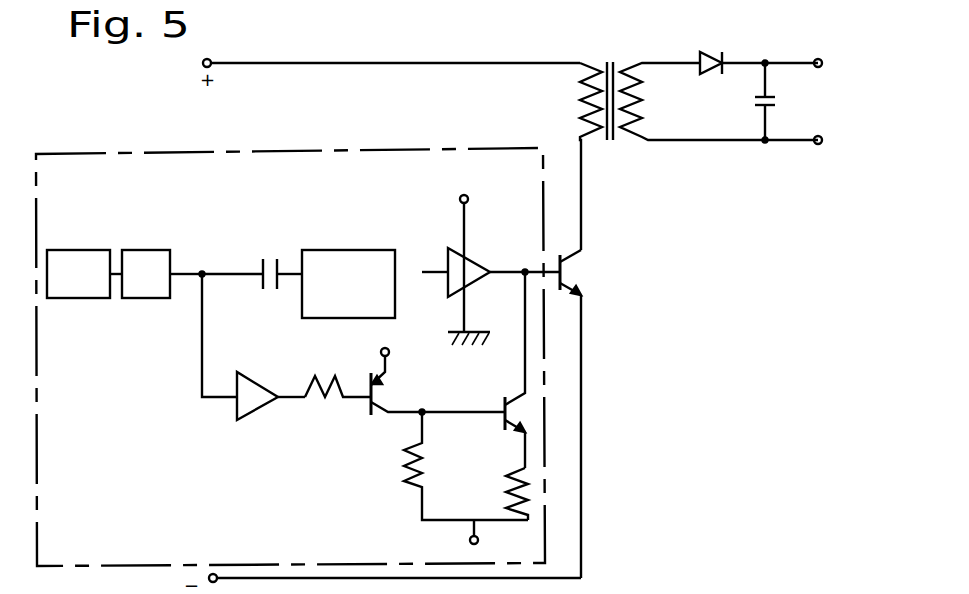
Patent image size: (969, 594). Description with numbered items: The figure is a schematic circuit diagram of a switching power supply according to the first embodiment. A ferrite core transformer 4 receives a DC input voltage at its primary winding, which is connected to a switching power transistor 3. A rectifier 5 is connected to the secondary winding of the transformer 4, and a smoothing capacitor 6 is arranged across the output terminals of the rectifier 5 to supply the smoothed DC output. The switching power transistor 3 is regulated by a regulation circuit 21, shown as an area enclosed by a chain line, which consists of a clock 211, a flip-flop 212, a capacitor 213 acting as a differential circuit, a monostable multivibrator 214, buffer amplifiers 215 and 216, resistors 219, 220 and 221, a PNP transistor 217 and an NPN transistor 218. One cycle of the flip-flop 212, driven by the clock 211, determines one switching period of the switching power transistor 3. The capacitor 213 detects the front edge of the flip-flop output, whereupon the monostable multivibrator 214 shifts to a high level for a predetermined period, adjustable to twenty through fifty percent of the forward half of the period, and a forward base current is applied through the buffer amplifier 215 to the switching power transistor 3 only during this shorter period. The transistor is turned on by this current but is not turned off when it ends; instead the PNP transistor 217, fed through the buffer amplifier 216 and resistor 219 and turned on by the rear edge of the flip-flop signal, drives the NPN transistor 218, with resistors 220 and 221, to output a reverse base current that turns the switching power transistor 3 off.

The switching power transistor 3 is at (585, 270).
The ferrite core transformer 4 is at (608, 62).
The rectifier 5 is at (715, 43).
The smoothing capacitor 6 is at (750, 105).
The regulation circuit 21 is at (233, 163).
The clock 211 is at (77, 292).
The flip-flop 212 is at (157, 292).
The capacitor 213 is at (270, 255).
The monostable multivibrator 214 is at (358, 258).
The buffer amplifier 215 is at (480, 252).
The buffer amplifier 216 is at (260, 418).
The PNP transistor 217 is at (367, 383).
The NPN transistor 218 is at (497, 404).
The resistor 219 is at (330, 408).
The resistor 220 is at (398, 468).
The resistor 221 is at (505, 490).